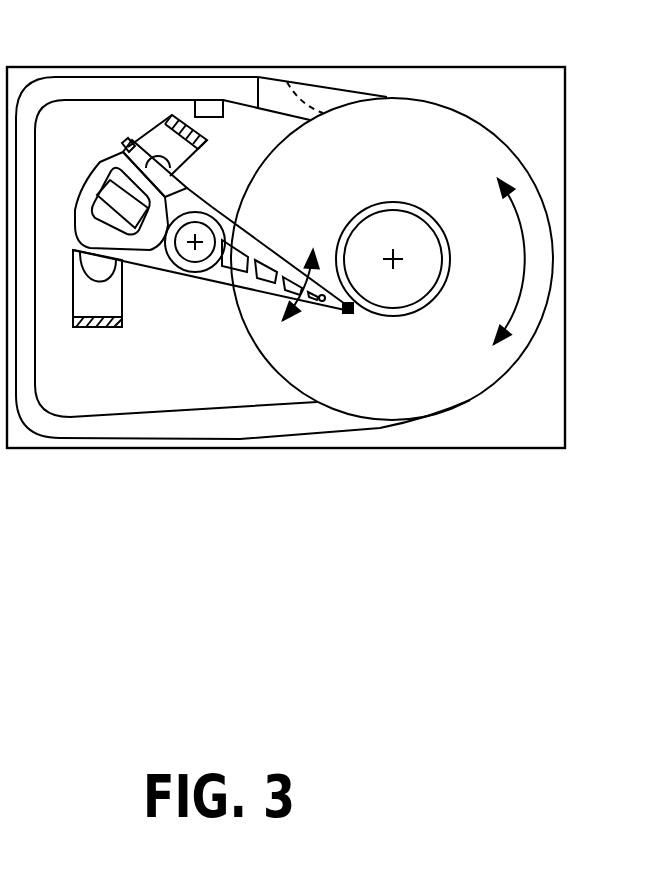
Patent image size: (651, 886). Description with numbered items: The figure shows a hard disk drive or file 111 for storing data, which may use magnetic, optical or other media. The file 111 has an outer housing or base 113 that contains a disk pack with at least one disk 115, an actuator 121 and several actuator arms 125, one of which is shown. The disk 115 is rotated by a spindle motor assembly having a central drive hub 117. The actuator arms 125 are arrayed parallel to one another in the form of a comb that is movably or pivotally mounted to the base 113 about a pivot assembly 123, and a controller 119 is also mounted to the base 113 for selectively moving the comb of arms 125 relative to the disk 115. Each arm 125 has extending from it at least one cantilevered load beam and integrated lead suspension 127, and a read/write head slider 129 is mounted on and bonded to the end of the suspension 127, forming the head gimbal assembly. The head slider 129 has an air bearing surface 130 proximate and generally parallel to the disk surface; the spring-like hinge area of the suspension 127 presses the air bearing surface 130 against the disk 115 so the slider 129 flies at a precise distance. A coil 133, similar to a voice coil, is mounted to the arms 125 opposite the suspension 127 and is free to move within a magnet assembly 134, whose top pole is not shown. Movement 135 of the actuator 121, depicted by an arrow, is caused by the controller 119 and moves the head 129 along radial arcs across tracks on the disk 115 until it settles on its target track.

The hard disk drive 111 is at (540, 47).
The base 113 is at (153, 66).
The disk 115 is at (468, 128).
The central drive hub 117 is at (380, 233).
The controller 119 is at (218, 118).
The actuator 121 is at (173, 282).
The pivot assembly 123 is at (200, 270).
The actuator arm 125 is at (268, 245).
The integrated lead suspension 127 is at (325, 300).
The head slider 129 is at (355, 318).
The air bearing surface 130 is at (353, 312).
The coil 133 is at (100, 160).
The magnet assembly 134 is at (158, 138).
The movement 135 is at (320, 242).